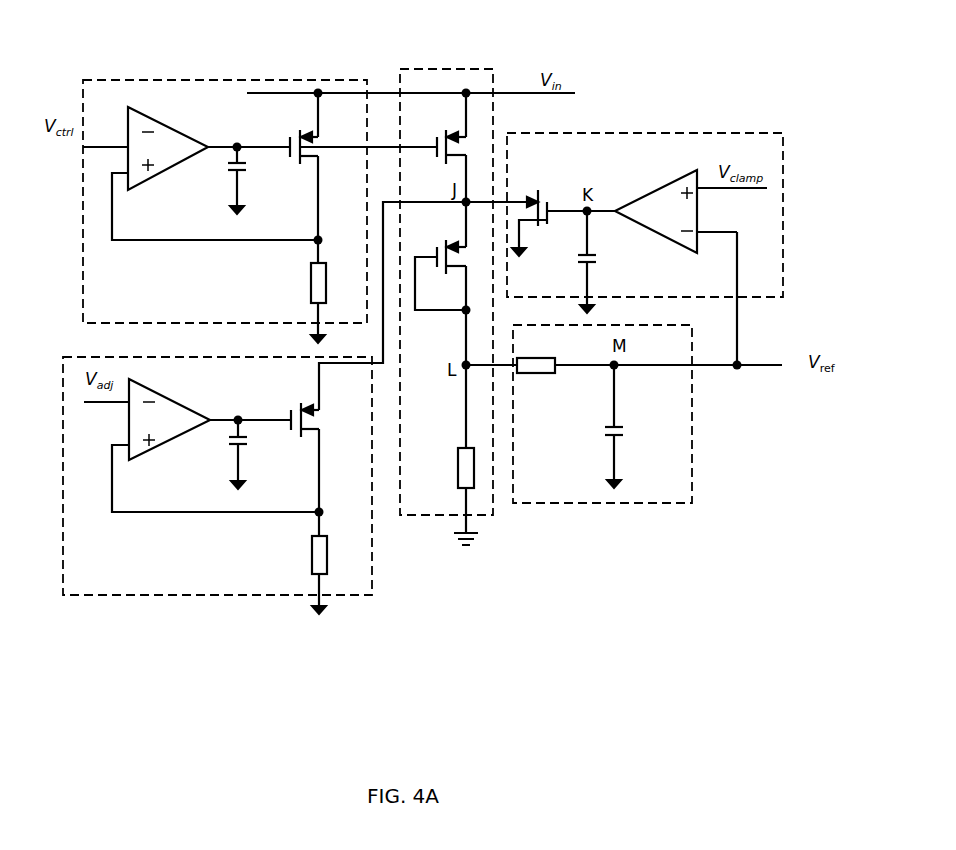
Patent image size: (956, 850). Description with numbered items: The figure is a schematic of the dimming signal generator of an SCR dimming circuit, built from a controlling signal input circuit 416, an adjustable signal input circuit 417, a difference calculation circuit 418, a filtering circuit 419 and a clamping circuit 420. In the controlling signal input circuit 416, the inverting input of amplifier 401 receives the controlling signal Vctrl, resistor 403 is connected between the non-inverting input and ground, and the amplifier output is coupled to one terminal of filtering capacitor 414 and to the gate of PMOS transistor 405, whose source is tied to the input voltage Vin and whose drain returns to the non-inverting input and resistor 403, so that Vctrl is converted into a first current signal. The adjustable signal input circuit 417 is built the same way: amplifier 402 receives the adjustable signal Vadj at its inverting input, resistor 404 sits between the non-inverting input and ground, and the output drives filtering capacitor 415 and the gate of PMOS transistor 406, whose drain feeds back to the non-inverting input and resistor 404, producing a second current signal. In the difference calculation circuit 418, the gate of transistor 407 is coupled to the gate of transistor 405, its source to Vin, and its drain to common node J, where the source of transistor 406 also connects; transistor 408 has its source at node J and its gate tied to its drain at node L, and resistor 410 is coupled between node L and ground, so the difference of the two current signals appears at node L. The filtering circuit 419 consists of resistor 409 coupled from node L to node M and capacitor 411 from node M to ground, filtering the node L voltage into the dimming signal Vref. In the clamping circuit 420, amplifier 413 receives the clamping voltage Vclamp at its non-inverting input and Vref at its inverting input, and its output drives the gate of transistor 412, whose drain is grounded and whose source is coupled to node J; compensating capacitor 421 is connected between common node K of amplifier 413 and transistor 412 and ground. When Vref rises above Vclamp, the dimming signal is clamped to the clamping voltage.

The amplifier 401 is at (168, 148).
The amplifier 402 is at (169, 419).
The resistor 403 is at (312, 291).
The resistor 404 is at (313, 562).
The transistor 405 is at (298, 159).
The transistor 406 is at (308, 423).
The transistor 407 is at (441, 134).
The transistor 408 is at (437, 253).
The resistor 409 is at (535, 369).
The resistor 410 is at (459, 478).
The capacitor 411 is at (625, 432).
The transistor 412 is at (527, 211).
The amplifier 413 is at (656, 211).
The filtering capacitor 414 is at (233, 171).
The filtering capacitor 415 is at (234, 444).
The controlling signal input circuit 416 is at (146, 80).
The adjustable signal input circuit 417 is at (93, 596).
The difference calculation circuit 418 is at (415, 69).
The filtering circuit 419 is at (540, 503).
The clamping circuit 420 is at (636, 133).
The compensating capacitor 421 is at (600, 258).